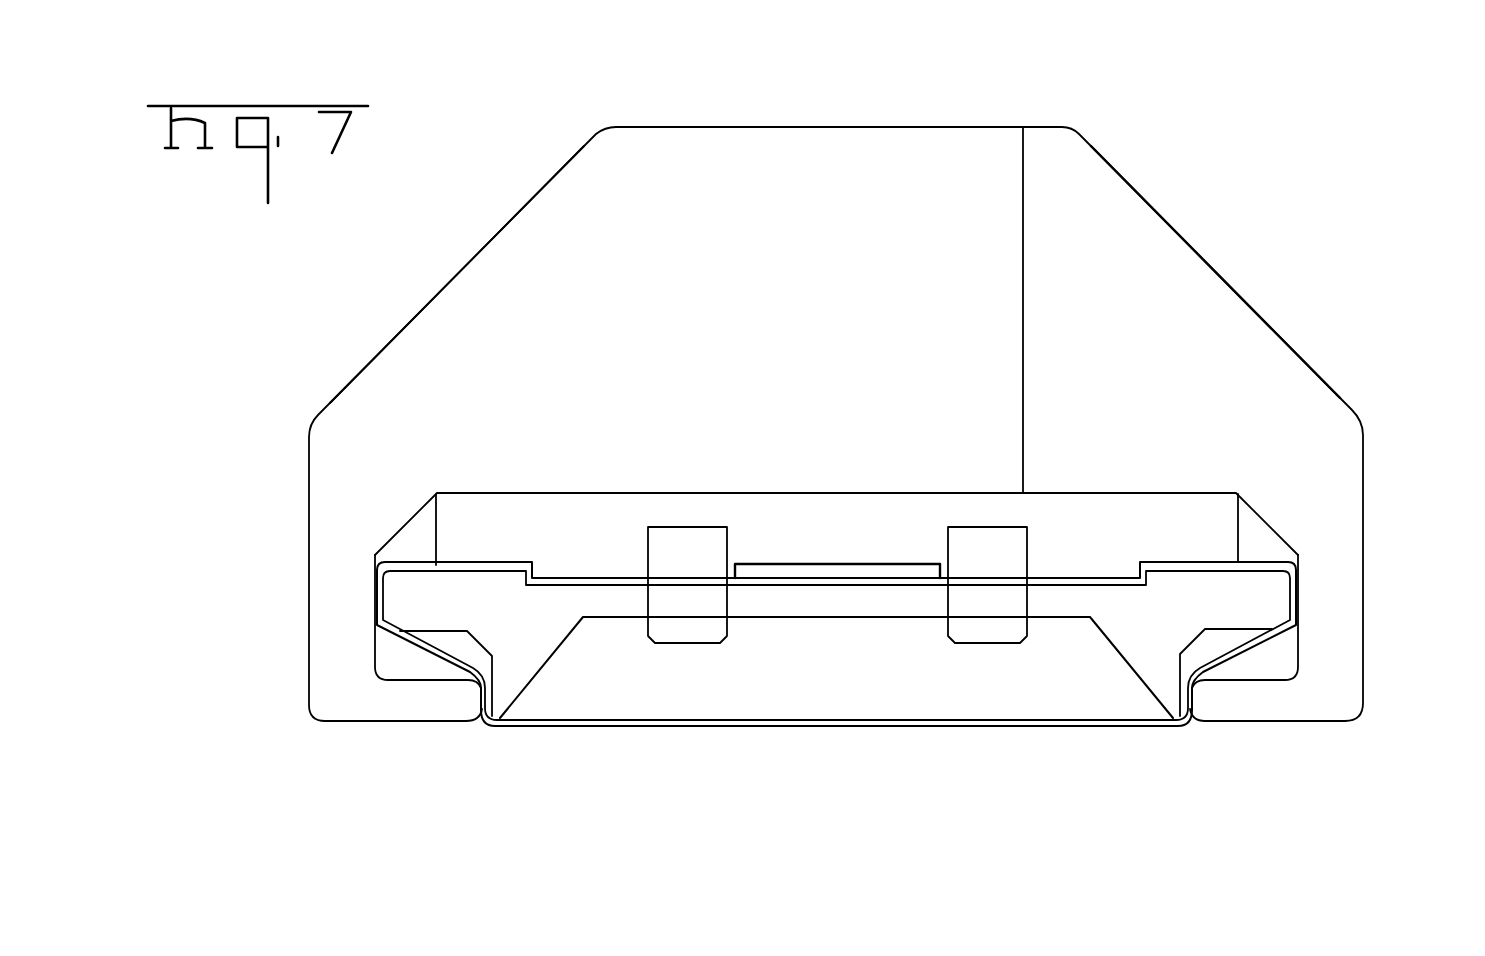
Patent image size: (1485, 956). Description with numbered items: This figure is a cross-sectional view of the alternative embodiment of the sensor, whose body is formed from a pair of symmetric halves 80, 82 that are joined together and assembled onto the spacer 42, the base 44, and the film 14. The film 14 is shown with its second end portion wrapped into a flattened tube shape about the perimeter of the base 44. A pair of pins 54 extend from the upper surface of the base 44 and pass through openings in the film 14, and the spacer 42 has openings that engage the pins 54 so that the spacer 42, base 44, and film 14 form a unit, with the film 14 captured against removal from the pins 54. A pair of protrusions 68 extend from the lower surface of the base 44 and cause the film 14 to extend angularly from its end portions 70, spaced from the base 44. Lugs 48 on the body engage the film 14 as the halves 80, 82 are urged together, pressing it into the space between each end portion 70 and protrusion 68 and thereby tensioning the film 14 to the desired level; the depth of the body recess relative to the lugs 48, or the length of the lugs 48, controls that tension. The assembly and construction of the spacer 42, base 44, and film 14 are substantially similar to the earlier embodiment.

The film 14 is at (1146, 729).
The spacer 42 is at (1188, 510).
The base 44 is at (1260, 588).
The lugs 48 is at (423, 703).
The pins 54 is at (695, 634).
The protrusions 68 is at (513, 680).
The end portions 70 is at (397, 598).
The symmetric half 80 is at (1125, 220).
The symmetric half 82 is at (562, 197).